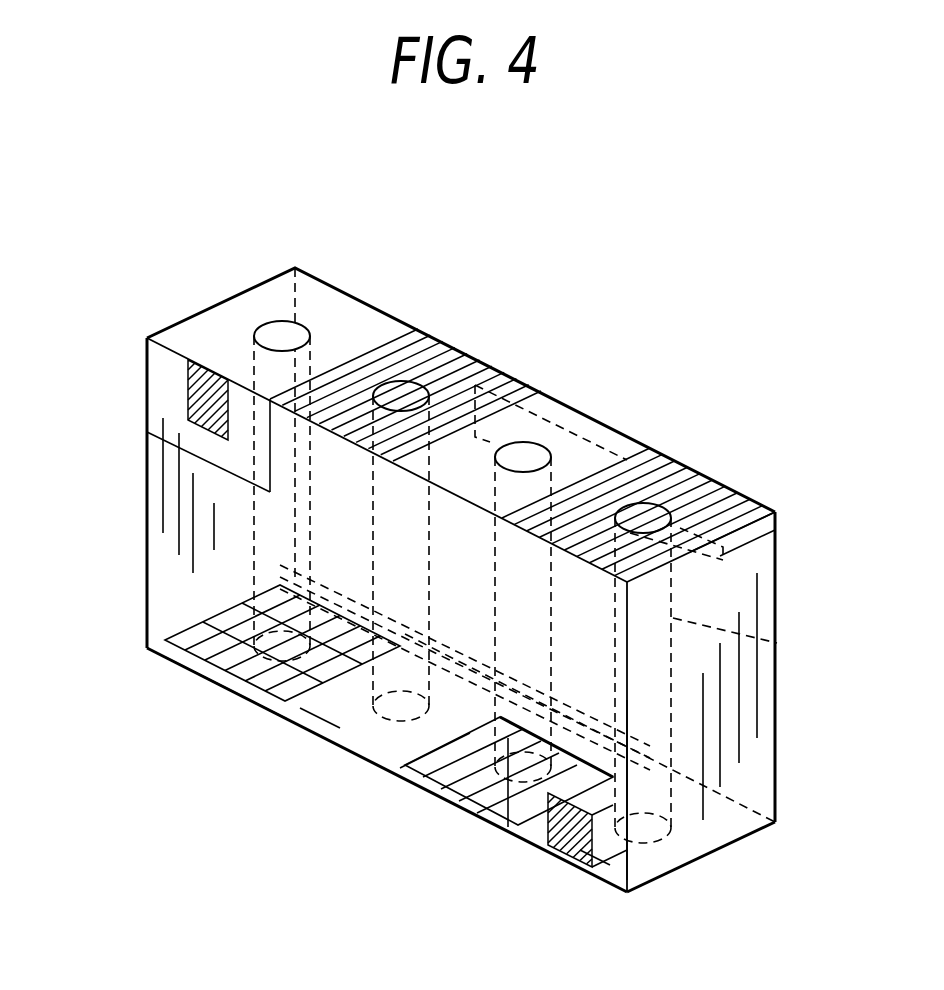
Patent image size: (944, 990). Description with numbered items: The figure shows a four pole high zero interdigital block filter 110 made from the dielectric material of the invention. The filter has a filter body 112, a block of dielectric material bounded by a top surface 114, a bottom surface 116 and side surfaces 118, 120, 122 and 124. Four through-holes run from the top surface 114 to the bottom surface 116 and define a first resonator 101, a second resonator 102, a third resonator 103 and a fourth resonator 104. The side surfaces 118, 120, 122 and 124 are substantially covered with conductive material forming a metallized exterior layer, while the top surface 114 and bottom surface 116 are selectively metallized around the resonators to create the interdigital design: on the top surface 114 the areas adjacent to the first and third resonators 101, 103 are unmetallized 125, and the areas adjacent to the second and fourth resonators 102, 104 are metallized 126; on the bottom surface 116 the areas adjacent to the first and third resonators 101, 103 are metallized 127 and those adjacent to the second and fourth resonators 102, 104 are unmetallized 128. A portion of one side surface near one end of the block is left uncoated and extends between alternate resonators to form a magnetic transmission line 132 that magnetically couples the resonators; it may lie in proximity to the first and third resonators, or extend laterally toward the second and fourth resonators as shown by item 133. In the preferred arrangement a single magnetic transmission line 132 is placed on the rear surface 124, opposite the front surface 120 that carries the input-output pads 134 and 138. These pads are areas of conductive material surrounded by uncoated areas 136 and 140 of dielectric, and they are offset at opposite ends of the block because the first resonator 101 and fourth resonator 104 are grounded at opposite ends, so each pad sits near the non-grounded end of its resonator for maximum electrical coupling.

The first resonator 101 is at (282, 333).
The second resonator 102 is at (401, 393).
The third resonator 103 is at (527, 445).
The fourth resonator 104 is at (645, 515).
The four pole high zero interdigital block filter 110 is at (232, 227).
The filter body 112 is at (752, 540).
The top surface 114 is at (705, 528).
The bottom surface 116 is at (247, 700).
The side surface 118 is at (177, 562).
The front surface 120 is at (593, 722).
The side surface 122 is at (757, 693).
The rear surface 124 is at (777, 643).
The unmetallized area 125 is at (358, 328).
The metallized area 126 is at (470, 380).
The metallized area 127 is at (173, 657).
The unmetallized area 128 is at (338, 720).
The magnetic transmission line 132 is at (472, 700).
The magnetic transmission line extension 133 is at (752, 565).
The input-output pad 134 is at (187, 399).
The uncoated area 136 is at (187, 455).
The input-output pad 138 is at (533, 835).
The uncoated area 140 is at (613, 830).